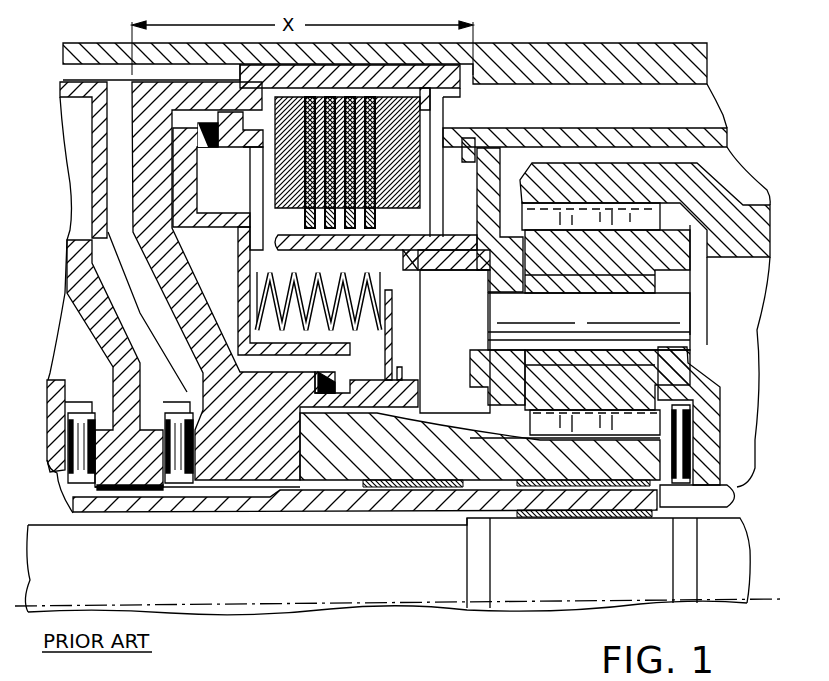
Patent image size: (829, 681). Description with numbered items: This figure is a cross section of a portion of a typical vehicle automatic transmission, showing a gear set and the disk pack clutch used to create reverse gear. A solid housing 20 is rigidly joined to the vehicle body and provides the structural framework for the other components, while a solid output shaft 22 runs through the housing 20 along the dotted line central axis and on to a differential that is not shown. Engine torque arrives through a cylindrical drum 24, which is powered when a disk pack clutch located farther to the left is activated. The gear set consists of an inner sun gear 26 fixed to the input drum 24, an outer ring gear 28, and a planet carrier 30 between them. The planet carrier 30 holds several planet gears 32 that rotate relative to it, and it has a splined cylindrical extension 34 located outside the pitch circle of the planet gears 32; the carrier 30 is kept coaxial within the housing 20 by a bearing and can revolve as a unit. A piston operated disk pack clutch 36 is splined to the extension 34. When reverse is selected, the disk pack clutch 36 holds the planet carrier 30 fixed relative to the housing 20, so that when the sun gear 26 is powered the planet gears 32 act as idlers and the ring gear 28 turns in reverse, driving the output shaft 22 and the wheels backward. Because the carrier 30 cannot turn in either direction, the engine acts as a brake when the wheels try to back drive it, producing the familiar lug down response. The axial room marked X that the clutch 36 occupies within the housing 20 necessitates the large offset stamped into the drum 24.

The housing 20 is at (680, 72).
The output shaft 22 is at (720, 563).
The cylindrical drum 24 is at (97, 152).
The inner sun gear 26 is at (607, 457).
The outer ring gear 28 is at (730, 258).
The planet carrier 30 is at (692, 370).
The planet gears 32 is at (630, 258).
The splined cylindrical extension 34 is at (380, 242).
The disk pack clutch 36 is at (387, 140).